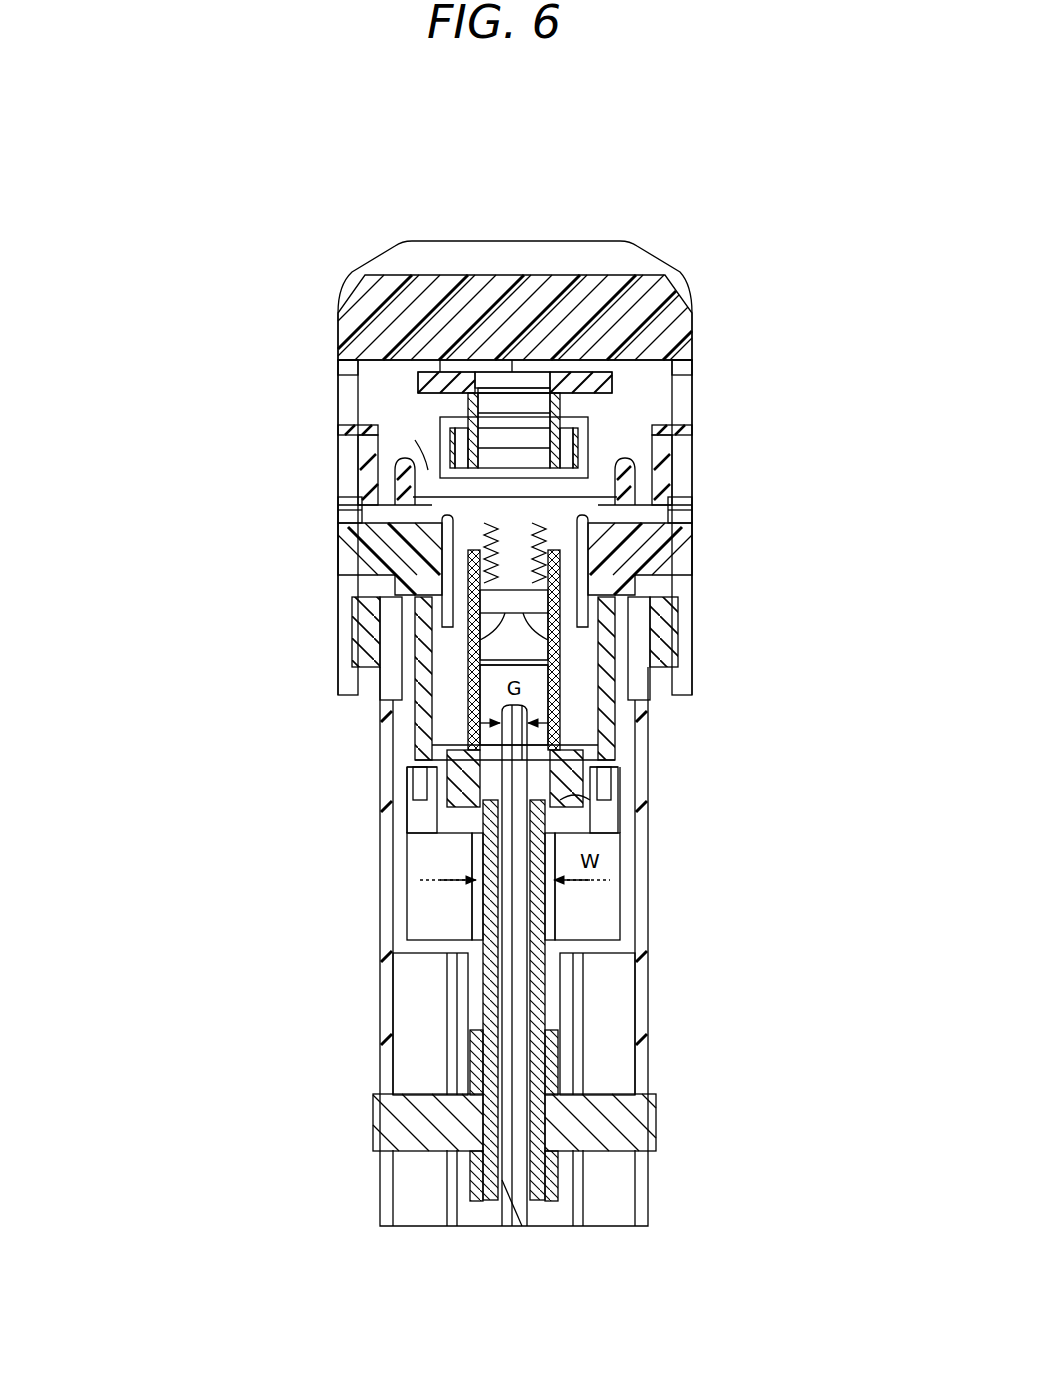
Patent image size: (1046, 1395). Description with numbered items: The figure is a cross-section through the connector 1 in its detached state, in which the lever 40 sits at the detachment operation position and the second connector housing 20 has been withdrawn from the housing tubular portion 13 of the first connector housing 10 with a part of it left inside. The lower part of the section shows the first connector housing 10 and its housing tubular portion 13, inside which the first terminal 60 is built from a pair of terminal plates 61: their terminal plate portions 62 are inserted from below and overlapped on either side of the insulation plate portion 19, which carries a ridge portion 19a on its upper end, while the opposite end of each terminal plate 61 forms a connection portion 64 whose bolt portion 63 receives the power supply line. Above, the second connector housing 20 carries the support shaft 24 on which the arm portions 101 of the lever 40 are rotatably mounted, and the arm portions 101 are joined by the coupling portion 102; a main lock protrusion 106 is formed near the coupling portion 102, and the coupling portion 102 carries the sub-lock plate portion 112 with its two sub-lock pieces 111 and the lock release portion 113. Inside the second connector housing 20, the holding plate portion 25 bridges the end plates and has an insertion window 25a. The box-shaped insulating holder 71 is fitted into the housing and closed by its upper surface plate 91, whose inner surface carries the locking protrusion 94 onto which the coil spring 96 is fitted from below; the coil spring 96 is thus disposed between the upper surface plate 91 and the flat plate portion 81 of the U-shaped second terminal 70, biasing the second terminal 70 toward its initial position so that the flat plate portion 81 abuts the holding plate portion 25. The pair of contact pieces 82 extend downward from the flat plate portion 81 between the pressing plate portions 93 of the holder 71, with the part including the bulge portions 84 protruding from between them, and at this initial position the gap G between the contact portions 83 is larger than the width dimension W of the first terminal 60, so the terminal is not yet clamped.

The connector 1 is at (237, 430).
The first connector housing 10 is at (362, 1015).
The housing tubular portion 13 is at (379, 812).
The insulation plate portion 19 is at (508, 958).
The ridge portion 19a is at (460, 762).
The second connector housing 20 is at (402, 632).
The support shaft 24 is at (418, 532).
The holding plate portion 25 is at (606, 640).
The insertion window 25a is at (486, 585).
The lever 40 is at (672, 272).
The first terminal 60 is at (480, 850).
The terminal plate 61 is at (476, 1050).
The terminal plate portion 62 is at (490, 905).
The bolt portion 63 is at (375, 1125).
The connection portion 64 is at (478, 1180).
The second terminal 70 is at (562, 705).
The holder 71 is at (426, 472).
The flat plate portion 81 is at (587, 592).
The contact piece 82 is at (575, 672).
The contact portion 83 is at (600, 805).
The bulge portion 84 is at (604, 775).
The upper surface plate 91 is at (432, 486).
The pressing plate portion 93 is at (470, 700).
The locking protrusion 94 is at (565, 555).
The coil spring 96 is at (445, 560).
The arm portion 101 is at (366, 600).
The coupling portion 102 is at (555, 310).
The main lock protrusion 106 is at (590, 445).
The sub-lock piece 111 is at (425, 372).
The sub-lock plate portion 112 is at (515, 372).
The lock release portion 113 is at (595, 400).